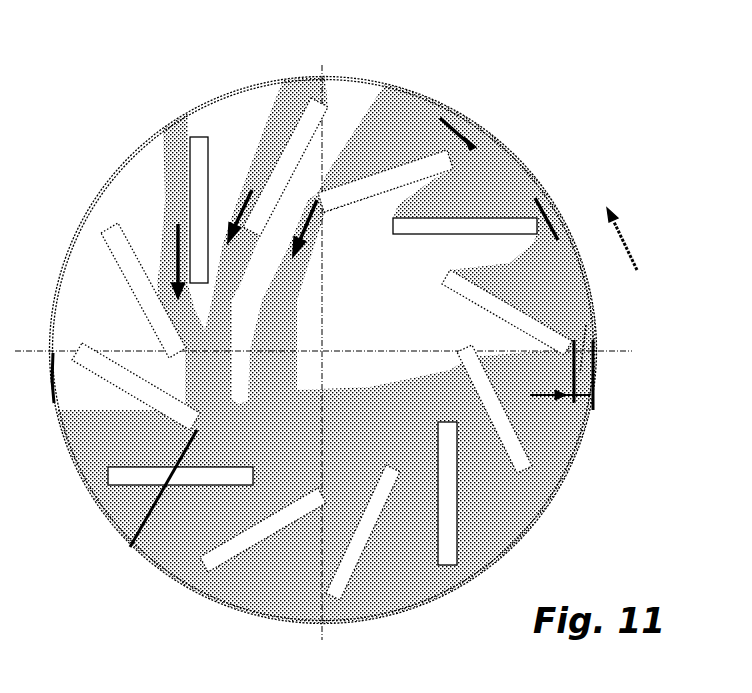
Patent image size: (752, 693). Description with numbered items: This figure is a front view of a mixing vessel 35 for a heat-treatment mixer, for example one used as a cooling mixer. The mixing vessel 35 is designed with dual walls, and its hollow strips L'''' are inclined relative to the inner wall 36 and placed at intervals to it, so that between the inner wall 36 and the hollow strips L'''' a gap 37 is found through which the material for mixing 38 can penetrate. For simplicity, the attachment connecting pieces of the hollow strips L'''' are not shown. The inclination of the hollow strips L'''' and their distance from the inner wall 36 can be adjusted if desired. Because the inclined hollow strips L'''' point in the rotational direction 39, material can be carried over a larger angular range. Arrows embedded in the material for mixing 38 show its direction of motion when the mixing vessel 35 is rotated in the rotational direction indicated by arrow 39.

The mixing vessel 35 is at (323, 339).
The inner wall 36 is at (522, 178).
The gap 37 is at (460, 112).
The material for mixing 38 is at (378, 437).
The rotational direction 39 is at (640, 243).
The hollow strips L'''' is at (409, 322).